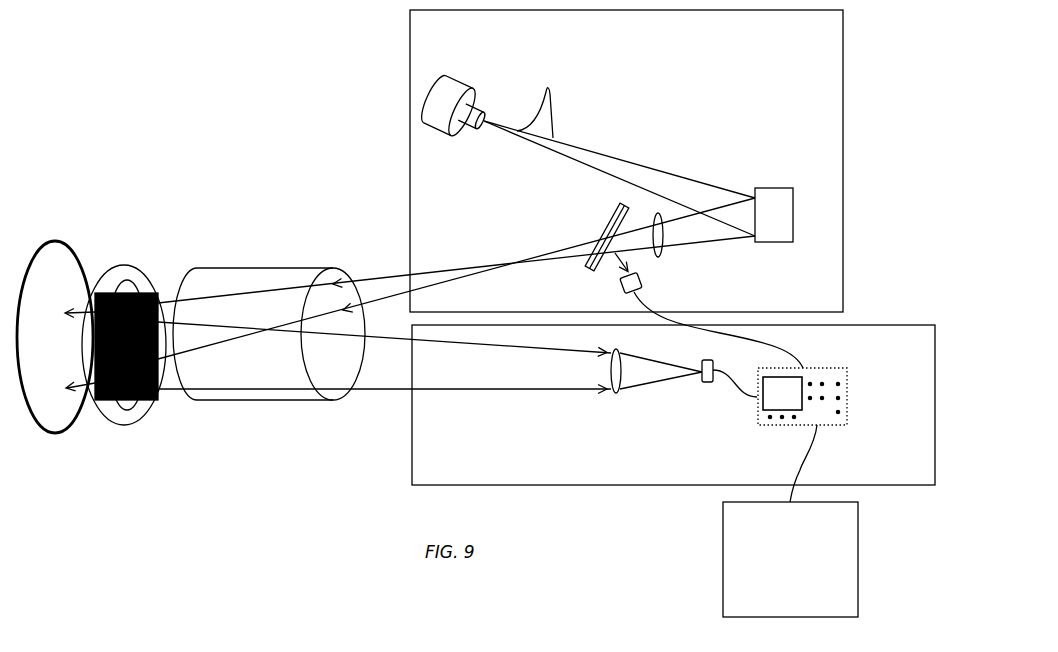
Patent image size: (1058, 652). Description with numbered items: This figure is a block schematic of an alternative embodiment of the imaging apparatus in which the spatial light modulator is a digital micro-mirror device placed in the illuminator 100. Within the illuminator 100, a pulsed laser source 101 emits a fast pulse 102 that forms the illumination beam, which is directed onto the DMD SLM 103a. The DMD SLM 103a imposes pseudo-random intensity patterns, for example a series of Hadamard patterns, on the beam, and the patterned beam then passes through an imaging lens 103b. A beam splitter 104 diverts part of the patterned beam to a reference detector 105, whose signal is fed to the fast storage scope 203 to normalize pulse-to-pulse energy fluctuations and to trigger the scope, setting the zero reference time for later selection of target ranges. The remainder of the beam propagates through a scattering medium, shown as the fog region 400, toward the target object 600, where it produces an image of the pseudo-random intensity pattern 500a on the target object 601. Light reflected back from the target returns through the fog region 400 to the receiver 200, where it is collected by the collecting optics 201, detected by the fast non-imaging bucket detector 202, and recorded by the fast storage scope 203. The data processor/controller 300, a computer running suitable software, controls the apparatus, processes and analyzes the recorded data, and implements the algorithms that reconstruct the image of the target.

The illuminator 100 is at (308, 88).
The pulsed laser source 101 is at (456, 113).
The fast pulse 102 is at (560, 112).
The DMD SLM 103a is at (796, 190).
The imaging lens 103b is at (656, 208).
The beam splitter 104 is at (601, 224).
The reference detector 105 is at (686, 310).
The receiver 200 is at (315, 530).
The collecting optic system 201 is at (585, 407).
The bucket detector 202 is at (704, 401).
The fast storage scope 203 is at (839, 425).
The data processor/controller 300 is at (790, 559).
The fog region 400 is at (269, 303).
The image of pseudo-random intensity pattern on object 500a is at (124, 426).
The target object 600 is at (55, 315).
The target object 601 is at (64, 343).